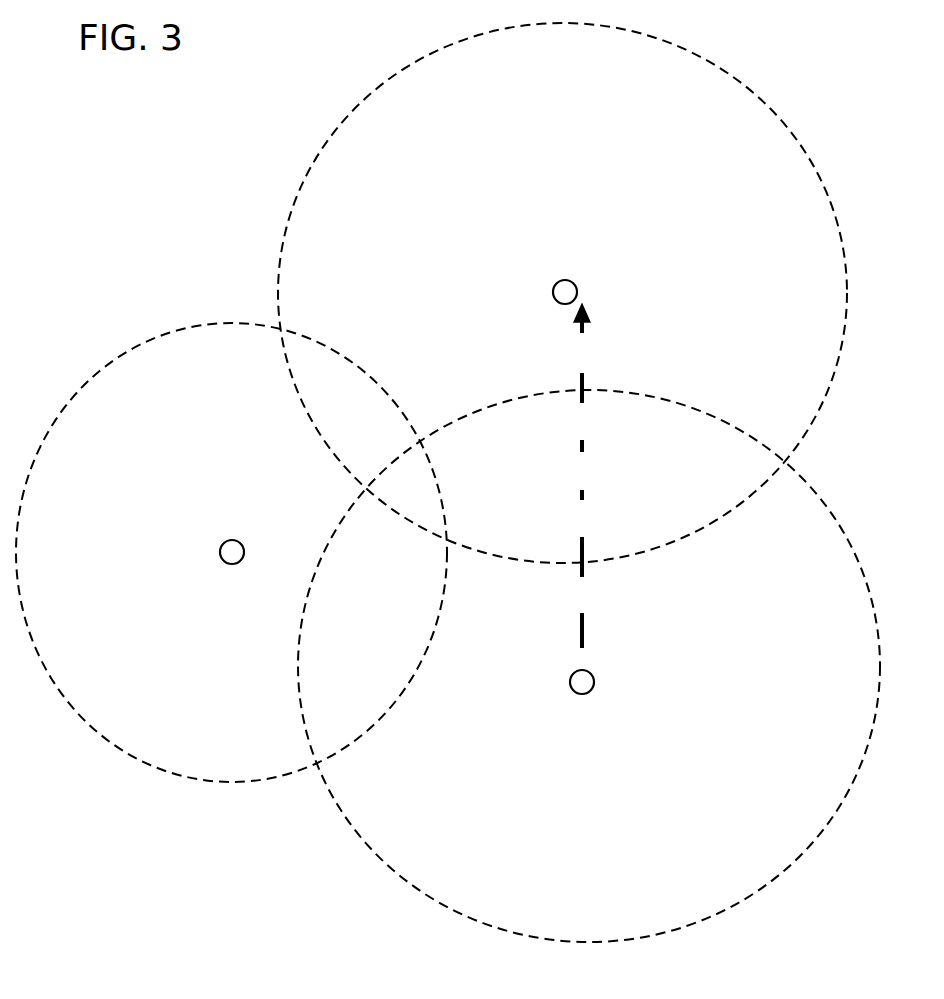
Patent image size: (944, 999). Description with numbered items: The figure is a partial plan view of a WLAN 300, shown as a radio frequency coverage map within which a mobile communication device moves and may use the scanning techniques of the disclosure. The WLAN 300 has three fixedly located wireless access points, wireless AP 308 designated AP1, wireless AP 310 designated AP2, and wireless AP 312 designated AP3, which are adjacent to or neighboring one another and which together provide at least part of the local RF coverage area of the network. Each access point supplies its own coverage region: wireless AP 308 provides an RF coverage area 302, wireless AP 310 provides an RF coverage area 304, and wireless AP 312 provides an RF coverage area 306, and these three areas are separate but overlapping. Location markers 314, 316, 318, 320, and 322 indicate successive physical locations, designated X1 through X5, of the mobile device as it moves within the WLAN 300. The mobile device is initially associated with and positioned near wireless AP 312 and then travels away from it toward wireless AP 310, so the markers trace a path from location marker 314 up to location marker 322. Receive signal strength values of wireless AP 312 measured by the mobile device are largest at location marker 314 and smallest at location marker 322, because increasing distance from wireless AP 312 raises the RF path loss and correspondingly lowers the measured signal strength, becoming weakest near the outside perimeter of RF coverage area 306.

The WLAN 300 is at (167, 874).
The RF coverage area 302 is at (132, 350).
The RF coverage area 304 is at (340, 128).
The RF coverage area 306 is at (358, 848).
The wireless AP 308 is at (232, 540).
The wireless AP 310 is at (562, 280).
The wireless AP 312 is at (578, 670).
The location marker 314 is at (580, 617).
The location marker 316 is at (580, 542).
The location marker 318 is at (580, 479).
The location marker 320 is at (580, 430).
The location marker 322 is at (580, 353).